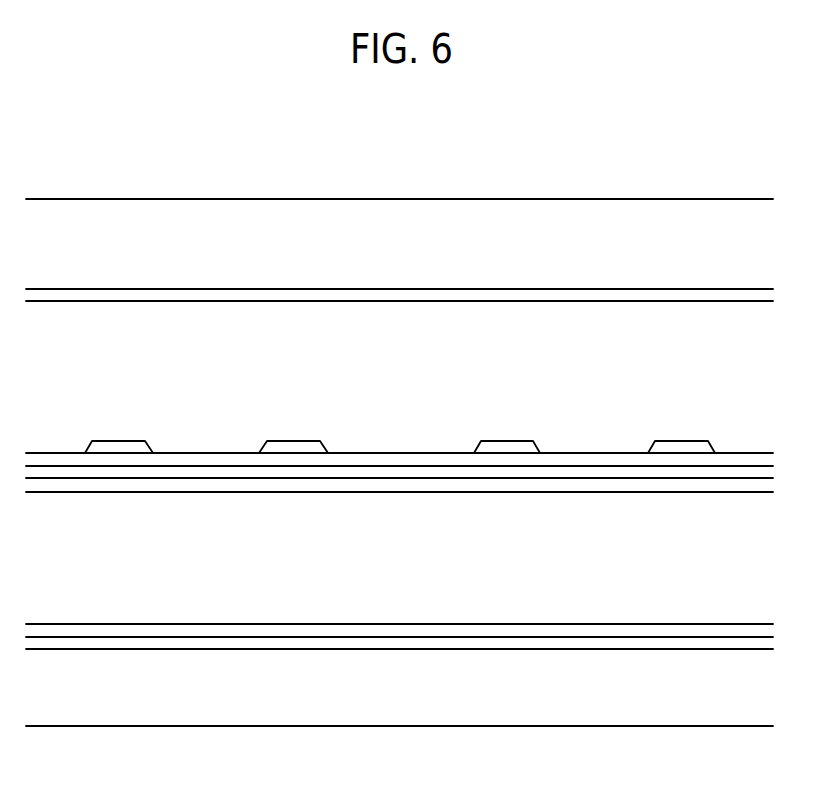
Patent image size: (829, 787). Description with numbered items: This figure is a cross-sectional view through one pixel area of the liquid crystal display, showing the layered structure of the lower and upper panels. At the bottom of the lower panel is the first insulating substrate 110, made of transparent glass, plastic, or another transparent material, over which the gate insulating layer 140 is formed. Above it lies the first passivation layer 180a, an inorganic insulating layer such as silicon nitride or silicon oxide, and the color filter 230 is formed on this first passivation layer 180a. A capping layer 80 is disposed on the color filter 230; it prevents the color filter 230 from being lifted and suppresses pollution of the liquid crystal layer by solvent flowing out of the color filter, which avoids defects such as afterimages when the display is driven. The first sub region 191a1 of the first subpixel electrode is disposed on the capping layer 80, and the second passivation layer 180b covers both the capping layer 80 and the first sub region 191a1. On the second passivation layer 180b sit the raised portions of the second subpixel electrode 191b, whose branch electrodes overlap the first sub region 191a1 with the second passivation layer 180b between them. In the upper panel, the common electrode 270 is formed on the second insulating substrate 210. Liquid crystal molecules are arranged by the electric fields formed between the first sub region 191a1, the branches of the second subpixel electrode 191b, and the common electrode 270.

The first insulating substrate 110 is at (575, 703).
The gate insulating layer 140 is at (327, 642).
The first passivation layer 180a is at (432, 629).
The second passivation layer 180b is at (404, 462).
The first sub region of first subpixel electrode 191a1 is at (600, 475).
The second subpixel electrode 191b is at (106, 445).
The capping layer 80 is at (200, 487).
The color filter 230 is at (185, 590).
The common electrode 270 is at (279, 300).
The second insulating substrate 210 is at (500, 222).